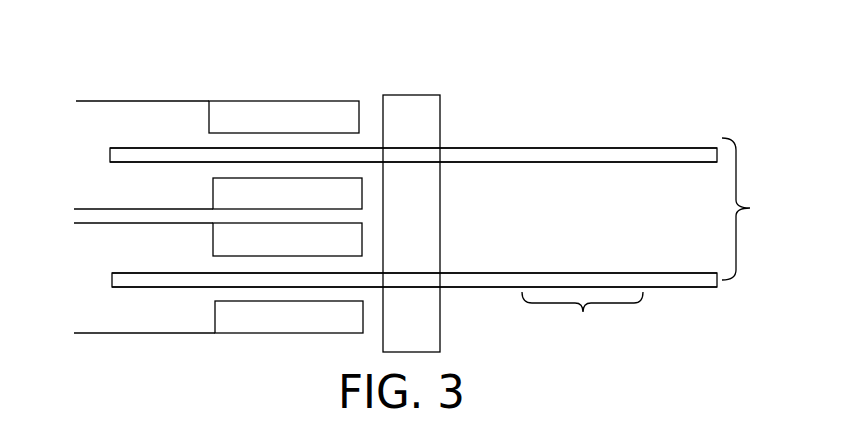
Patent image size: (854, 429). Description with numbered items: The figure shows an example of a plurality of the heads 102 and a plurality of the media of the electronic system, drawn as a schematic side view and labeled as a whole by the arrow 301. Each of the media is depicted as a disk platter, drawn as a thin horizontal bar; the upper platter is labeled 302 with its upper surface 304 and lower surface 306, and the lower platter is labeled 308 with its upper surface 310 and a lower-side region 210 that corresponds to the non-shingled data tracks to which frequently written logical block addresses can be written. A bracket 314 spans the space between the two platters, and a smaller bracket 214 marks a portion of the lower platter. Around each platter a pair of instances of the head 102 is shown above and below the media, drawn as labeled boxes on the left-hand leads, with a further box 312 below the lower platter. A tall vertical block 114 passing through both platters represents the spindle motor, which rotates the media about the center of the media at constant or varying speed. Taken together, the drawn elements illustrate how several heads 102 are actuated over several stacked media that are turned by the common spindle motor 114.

The electronic assembly 301 is at (173, 37).
The head 102 is at (285, 178).
The electronic component 312 is at (289, 317).
The spindle motor 114 is at (414, 126).
The first circuit board 302 is at (583, 153).
The first surface of first circuit board 304 is at (523, 148).
The second surface of first circuit board 306 is at (495, 162).
The second circuit board 308 is at (583, 280).
The first surface of second circuit board 310 is at (507, 273).
The non-shingled data tracks 210 is at (683, 288).
The portion of second circuit board 214 is at (583, 312).
The spacing between circuit boards 314 is at (750, 208).